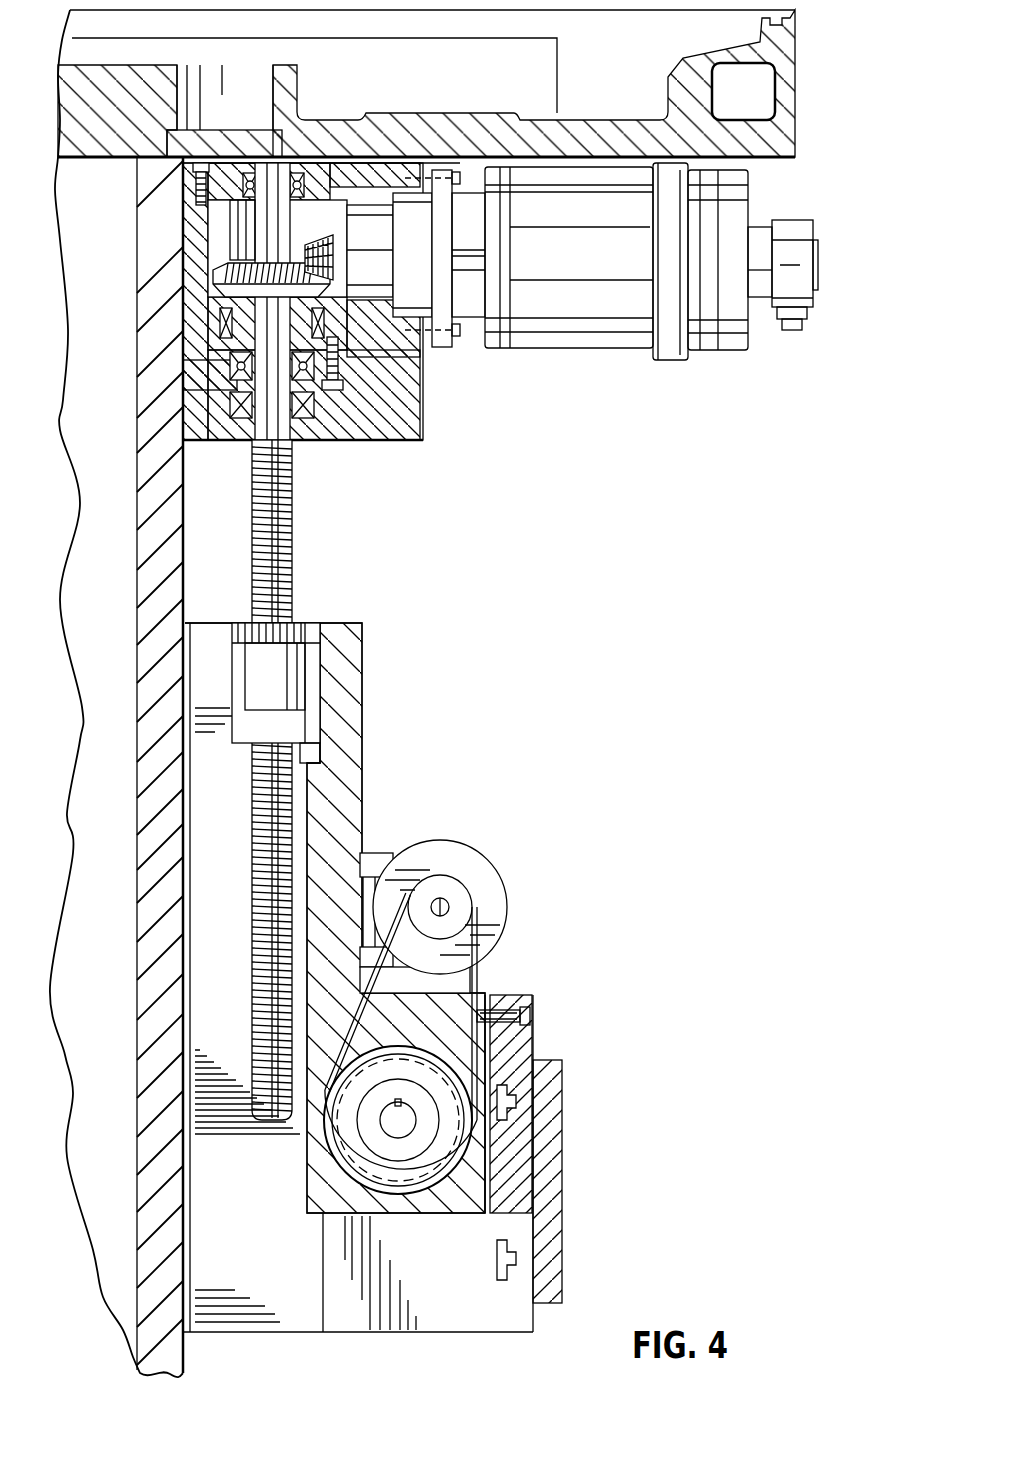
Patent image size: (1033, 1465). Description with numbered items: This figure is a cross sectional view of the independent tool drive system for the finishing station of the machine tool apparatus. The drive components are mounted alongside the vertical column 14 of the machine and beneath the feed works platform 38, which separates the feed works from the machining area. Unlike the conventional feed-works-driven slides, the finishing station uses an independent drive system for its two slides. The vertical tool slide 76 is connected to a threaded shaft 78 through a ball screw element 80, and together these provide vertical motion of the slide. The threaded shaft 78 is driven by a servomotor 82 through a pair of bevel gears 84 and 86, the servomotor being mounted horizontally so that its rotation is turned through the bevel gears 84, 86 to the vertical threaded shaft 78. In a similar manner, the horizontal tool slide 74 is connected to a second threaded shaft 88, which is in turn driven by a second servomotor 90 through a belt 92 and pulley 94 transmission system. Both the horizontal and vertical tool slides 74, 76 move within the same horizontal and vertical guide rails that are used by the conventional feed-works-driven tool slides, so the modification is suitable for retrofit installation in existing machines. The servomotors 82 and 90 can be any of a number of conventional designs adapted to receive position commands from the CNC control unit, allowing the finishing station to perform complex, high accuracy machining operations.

The vertical column 14 is at (183, 1348).
The feed works platform 38 is at (795, 120).
The horizontal tool slide 74 is at (563, 1257).
The vertical tool slide 76 is at (362, 745).
The threaded shaft 78 is at (293, 571).
The ball screw element 80 is at (300, 672).
The servomotor 82 is at (680, 350).
The bevel gear 84 is at (228, 250).
The bevel gear 86 is at (332, 248).
The threaded shaft 88 is at (413, 1148).
The servomotor 90 is at (508, 898).
The belt 92 is at (478, 975).
The pulley 94 is at (403, 1047).